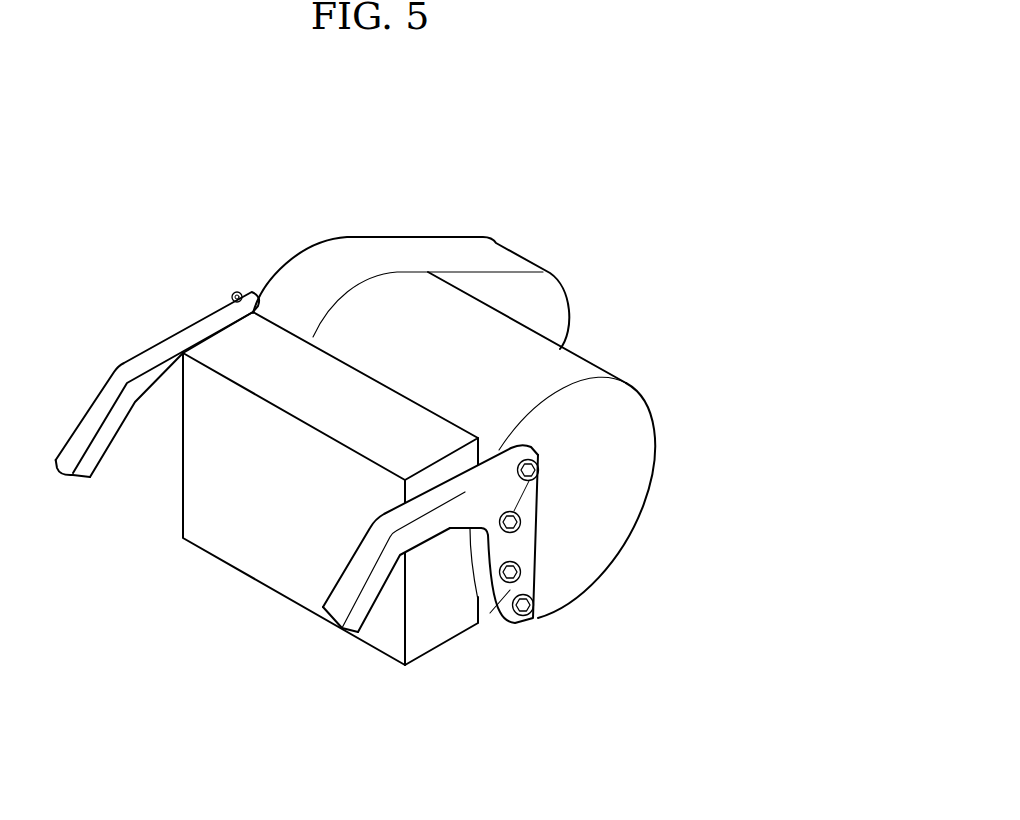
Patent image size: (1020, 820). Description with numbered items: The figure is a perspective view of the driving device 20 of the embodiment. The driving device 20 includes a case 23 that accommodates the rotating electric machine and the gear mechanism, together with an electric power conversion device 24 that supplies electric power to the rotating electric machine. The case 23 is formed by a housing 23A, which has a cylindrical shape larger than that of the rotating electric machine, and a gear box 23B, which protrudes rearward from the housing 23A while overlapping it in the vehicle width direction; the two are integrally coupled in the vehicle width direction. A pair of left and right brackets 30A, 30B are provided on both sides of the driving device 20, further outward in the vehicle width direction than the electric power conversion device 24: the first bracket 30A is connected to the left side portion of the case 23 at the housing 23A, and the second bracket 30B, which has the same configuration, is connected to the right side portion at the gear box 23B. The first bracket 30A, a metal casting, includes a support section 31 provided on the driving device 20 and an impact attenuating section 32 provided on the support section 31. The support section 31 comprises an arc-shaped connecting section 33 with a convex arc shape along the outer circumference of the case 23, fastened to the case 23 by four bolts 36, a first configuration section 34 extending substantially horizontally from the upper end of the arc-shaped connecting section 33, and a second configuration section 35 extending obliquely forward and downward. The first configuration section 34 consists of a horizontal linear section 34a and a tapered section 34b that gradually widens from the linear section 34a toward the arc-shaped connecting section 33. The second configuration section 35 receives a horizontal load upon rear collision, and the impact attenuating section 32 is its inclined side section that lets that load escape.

The driving device 20 is at (633, 201).
The case 23 is at (510, 427).
The housing 23A is at (628, 479).
The gear box 23B is at (543, 305).
The electric power conversion device 24 is at (247, 533).
The first bracket 30A is at (379, 431).
The second bracket 30B is at (80, 409).
The support section 31 is at (429, 550).
The impact attenuating section 32 is at (360, 562).
The arc-shaped connecting section 33 is at (497, 617).
The first configuration section 34 is at (437, 133).
The linear section 34a is at (430, 523).
The tapered section 34b is at (473, 507).
The second configuration section 35 is at (357, 615).
The bolt 36 is at (233, 291).